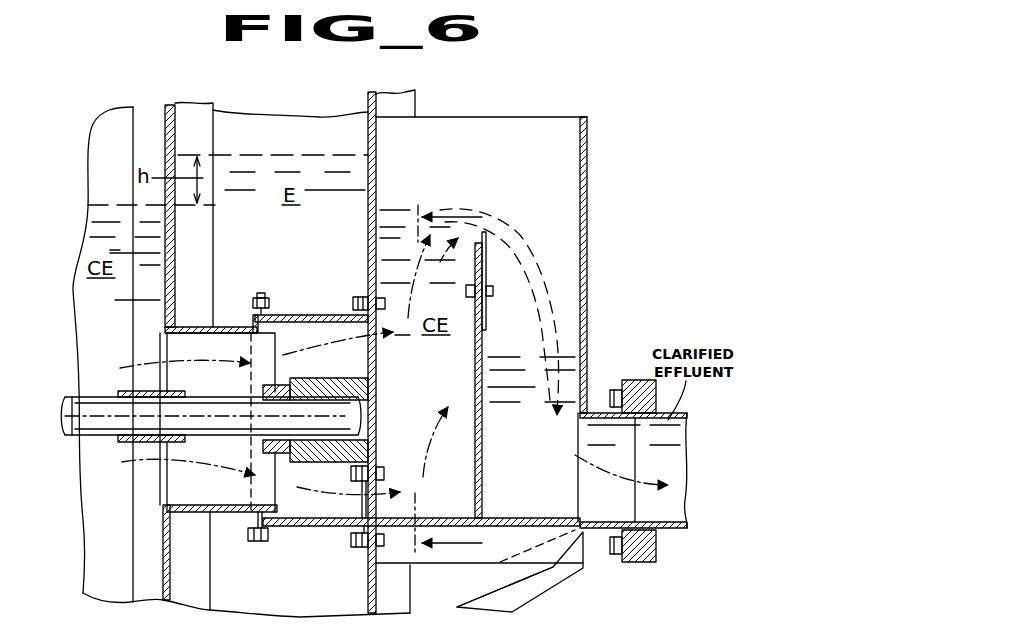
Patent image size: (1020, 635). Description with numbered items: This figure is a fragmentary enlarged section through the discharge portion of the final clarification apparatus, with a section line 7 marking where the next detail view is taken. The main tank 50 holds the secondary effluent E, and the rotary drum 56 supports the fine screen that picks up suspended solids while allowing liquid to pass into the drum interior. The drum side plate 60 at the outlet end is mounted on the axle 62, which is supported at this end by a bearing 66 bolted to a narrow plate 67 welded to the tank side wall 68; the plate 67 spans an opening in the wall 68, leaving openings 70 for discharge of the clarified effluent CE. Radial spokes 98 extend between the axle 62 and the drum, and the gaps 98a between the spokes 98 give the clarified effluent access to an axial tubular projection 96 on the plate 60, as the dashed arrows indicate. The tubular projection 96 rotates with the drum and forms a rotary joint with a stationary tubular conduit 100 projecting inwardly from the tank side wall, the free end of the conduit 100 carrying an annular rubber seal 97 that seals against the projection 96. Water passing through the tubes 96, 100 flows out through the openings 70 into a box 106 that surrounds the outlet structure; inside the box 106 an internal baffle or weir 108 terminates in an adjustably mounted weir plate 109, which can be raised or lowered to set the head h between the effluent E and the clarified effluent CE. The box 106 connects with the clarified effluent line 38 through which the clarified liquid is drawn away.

The section line 7- 7 is at (437, 381).
The clarified effluent line 38 is at (676, 508).
The main tank 50 is at (286, 114).
The rotary drum 56 is at (162, 104).
The end plate 60 is at (176, 249).
The axle 62 is at (70, 414).
The bearing 66 is at (345, 385).
The narrow plate 67 is at (376, 410).
The side wall 68 is at (378, 146).
The openings 70 is at (378, 352).
The axial tubular projection 96 is at (218, 325).
The annular rubber seal 97 is at (250, 523).
The radial spokes 98 is at (136, 326).
The gaps 98a is at (162, 476).
The stationary tubular conduit 100 is at (305, 315).
The box 106 is at (589, 143).
The internal baffle or weir 108 is at (484, 492).
The weir plate 109 is at (520, 236).